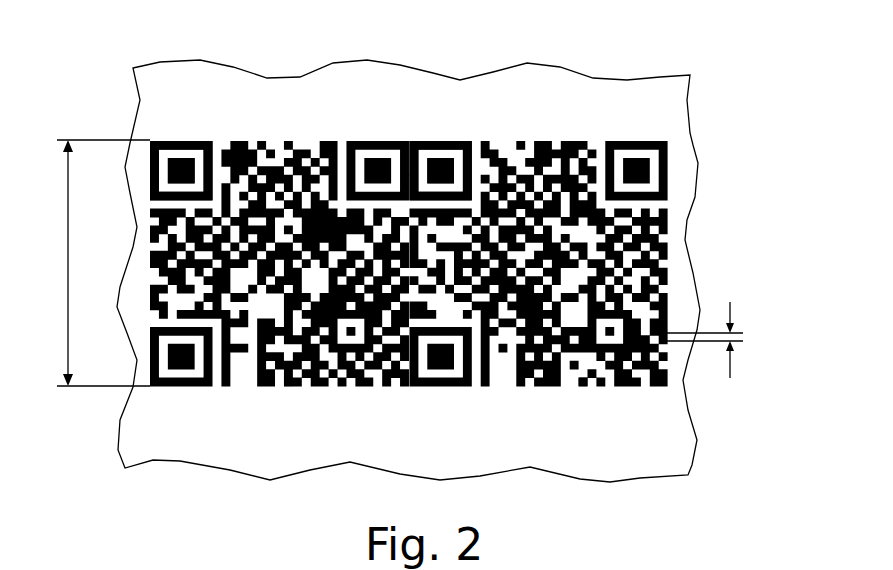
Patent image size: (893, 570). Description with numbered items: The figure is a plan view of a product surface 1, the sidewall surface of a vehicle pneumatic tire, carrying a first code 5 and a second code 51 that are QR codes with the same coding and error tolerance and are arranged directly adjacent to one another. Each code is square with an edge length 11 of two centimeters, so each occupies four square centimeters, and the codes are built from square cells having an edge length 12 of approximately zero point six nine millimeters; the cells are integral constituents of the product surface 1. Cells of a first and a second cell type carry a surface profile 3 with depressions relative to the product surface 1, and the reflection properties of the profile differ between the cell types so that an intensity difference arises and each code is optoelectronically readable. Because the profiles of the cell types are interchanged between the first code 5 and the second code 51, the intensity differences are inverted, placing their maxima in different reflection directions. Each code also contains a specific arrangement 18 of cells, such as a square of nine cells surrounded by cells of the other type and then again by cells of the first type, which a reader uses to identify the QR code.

The product surface 1 is at (668, 106).
The surface profile 3 is at (477, 193).
The first code 5 is at (282, 118).
The second code 51 is at (566, 126).
The specific arrangement 18 is at (180, 138).
The edge length 11 is at (88, 263).
The edge length 12 is at (721, 340).